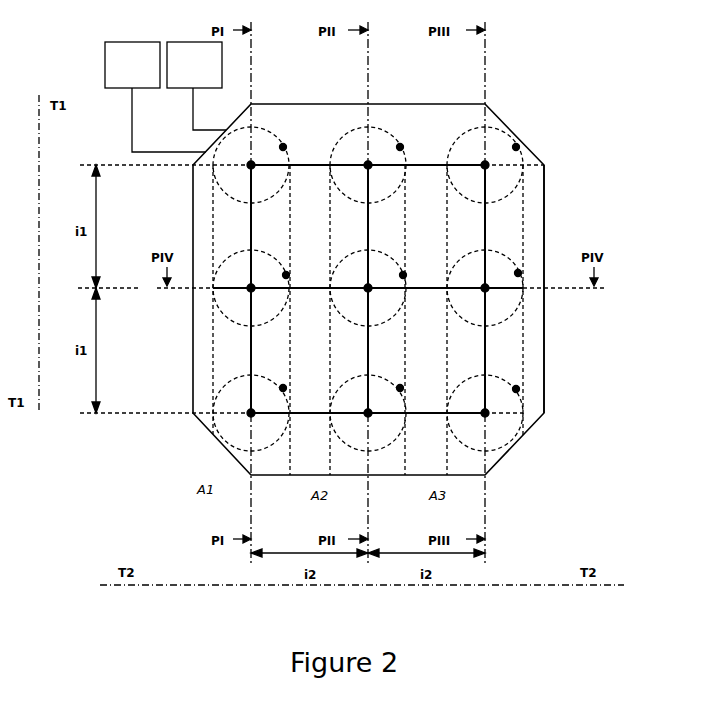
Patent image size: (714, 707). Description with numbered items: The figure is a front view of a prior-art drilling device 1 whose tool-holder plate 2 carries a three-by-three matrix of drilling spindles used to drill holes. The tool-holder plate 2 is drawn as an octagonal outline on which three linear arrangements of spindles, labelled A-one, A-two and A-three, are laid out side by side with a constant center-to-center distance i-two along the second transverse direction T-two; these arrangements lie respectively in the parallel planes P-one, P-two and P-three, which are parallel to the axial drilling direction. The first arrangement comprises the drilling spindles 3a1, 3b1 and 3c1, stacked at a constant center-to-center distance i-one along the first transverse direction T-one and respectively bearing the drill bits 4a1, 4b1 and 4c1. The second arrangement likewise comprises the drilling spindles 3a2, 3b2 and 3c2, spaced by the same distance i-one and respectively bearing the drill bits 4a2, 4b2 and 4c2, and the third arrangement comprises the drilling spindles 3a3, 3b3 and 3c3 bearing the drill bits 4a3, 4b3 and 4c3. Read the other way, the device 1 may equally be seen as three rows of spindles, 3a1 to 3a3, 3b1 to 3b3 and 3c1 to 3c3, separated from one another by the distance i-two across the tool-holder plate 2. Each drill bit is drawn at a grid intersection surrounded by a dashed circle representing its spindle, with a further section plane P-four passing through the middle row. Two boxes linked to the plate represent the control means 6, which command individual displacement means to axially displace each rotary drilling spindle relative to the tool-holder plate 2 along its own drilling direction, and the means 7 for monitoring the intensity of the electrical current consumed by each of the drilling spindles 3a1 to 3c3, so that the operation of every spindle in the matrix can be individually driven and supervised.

The drilling device 1 is at (553, 161).
The tool-holder plate 2 is at (544, 400).
The control means 6 is at (155, 97).
The means for monitoring the intensity of the electrical current 7 is at (196, 86).
The drilling spindle 3a1 is at (287, 143).
The drilling spindle 3a2 is at (404, 143).
The drilling spindle 3a3 is at (520, 143).
The drilling spindle 3b1 is at (290, 272).
The drilling spindle 3b2 is at (407, 272).
The drilling spindle 3b3 is at (523, 271).
The drilling spindle 3c1 is at (288, 385).
The drilling spindle 3c2 is at (405, 385).
The drilling spindle 3c3 is at (521, 387).
The drill bit 4a1 is at (253, 164).
The drill bit 4a2 is at (370, 164).
The drill bit 4a3 is at (487, 164).
The drill bit 4b1 is at (253, 287).
The drill bit 4b2 is at (370, 287).
The drill bit 4b3 is at (487, 287).
The drill bit 4c1 is at (253, 412).
The drill bit 4c2 is at (370, 412).
The drill bit 4c3 is at (487, 412).